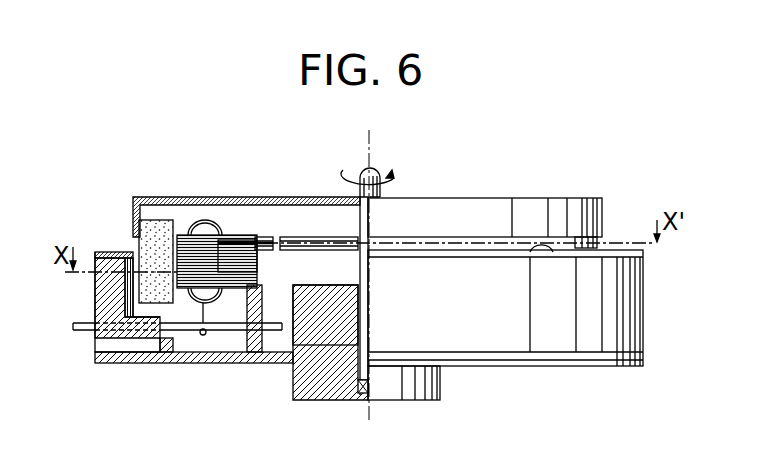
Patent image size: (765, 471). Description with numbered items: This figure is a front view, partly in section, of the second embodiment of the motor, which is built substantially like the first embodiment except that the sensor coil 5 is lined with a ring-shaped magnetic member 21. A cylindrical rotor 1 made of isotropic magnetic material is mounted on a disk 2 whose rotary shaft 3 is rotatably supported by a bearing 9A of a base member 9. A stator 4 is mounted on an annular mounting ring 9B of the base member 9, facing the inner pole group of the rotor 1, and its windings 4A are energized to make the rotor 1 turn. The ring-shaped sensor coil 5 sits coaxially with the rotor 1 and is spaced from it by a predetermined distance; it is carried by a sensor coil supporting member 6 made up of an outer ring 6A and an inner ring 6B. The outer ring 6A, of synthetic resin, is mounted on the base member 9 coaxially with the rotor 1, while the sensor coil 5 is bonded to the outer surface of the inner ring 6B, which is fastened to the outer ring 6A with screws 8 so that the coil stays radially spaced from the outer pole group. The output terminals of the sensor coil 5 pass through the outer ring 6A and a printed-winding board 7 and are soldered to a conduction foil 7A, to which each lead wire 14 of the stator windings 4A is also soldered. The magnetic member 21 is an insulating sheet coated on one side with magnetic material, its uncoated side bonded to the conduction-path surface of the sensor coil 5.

The cylindrical rotor 1 is at (155, 220).
The disk 2 is at (311, 197).
The rotary shaft 3 is at (372, 168).
The stator 4 is at (260, 245).
The windings 4A is at (212, 222).
The sensor coil 5 is at (123, 270).
The sensor coil supporting member 6 is at (625, 304).
The outer ring 6A is at (95, 263).
The inner ring 6B is at (127, 252).
The printed-winding board 7 is at (165, 353).
The conduction foil 7A is at (183, 326).
The screws 8 is at (548, 248).
The base member 9 is at (266, 355).
The bearing 9A is at (325, 400).
The annular mounting ring 9B is at (272, 285).
The lead wire 14 is at (204, 322).
The ring-shaped magnetic member 21 is at (97, 312).